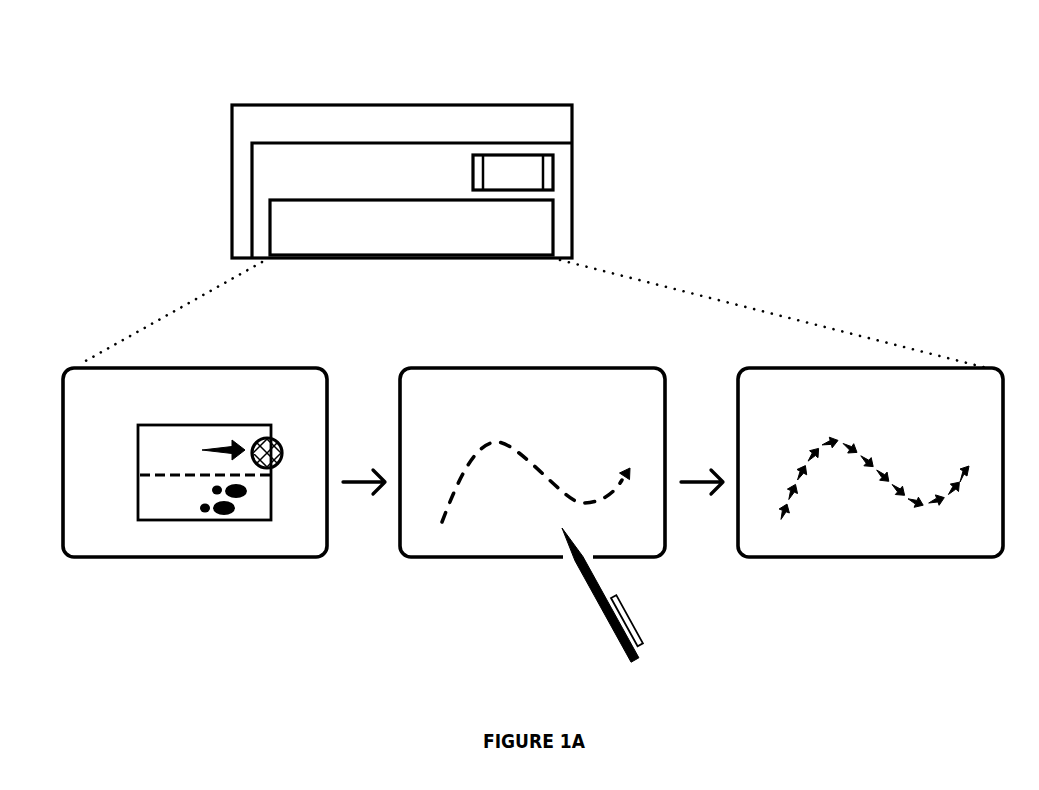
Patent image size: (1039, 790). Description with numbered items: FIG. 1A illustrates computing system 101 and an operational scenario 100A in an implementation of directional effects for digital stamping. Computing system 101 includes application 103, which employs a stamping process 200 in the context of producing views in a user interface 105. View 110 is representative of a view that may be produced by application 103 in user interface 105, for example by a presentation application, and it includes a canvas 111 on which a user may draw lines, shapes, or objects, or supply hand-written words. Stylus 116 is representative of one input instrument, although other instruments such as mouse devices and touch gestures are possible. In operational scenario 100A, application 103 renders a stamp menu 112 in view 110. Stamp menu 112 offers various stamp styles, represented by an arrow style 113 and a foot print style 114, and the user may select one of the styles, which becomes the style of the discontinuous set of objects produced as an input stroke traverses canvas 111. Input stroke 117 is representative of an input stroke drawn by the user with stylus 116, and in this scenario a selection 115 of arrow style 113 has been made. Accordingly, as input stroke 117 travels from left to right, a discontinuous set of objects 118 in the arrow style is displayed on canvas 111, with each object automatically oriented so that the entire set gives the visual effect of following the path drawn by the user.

The operational scenario 100A is at (46, 49).
The computing system 101 is at (506, 138).
The application 103 is at (457, 184).
The stamping process 200 is at (525, 184).
The user interface 105 is at (478, 236).
The view 110 is at (101, 558).
The canvas 111 is at (203, 400).
The stamp menu 112 is at (135, 477).
The arrow style 113 is at (187, 458).
The foot print style 114 is at (187, 506).
The selection 115 is at (277, 444).
The stylus 116 is at (615, 640).
The input stroke 117 is at (467, 489).
The discontinuous set of objects 118 is at (803, 491).